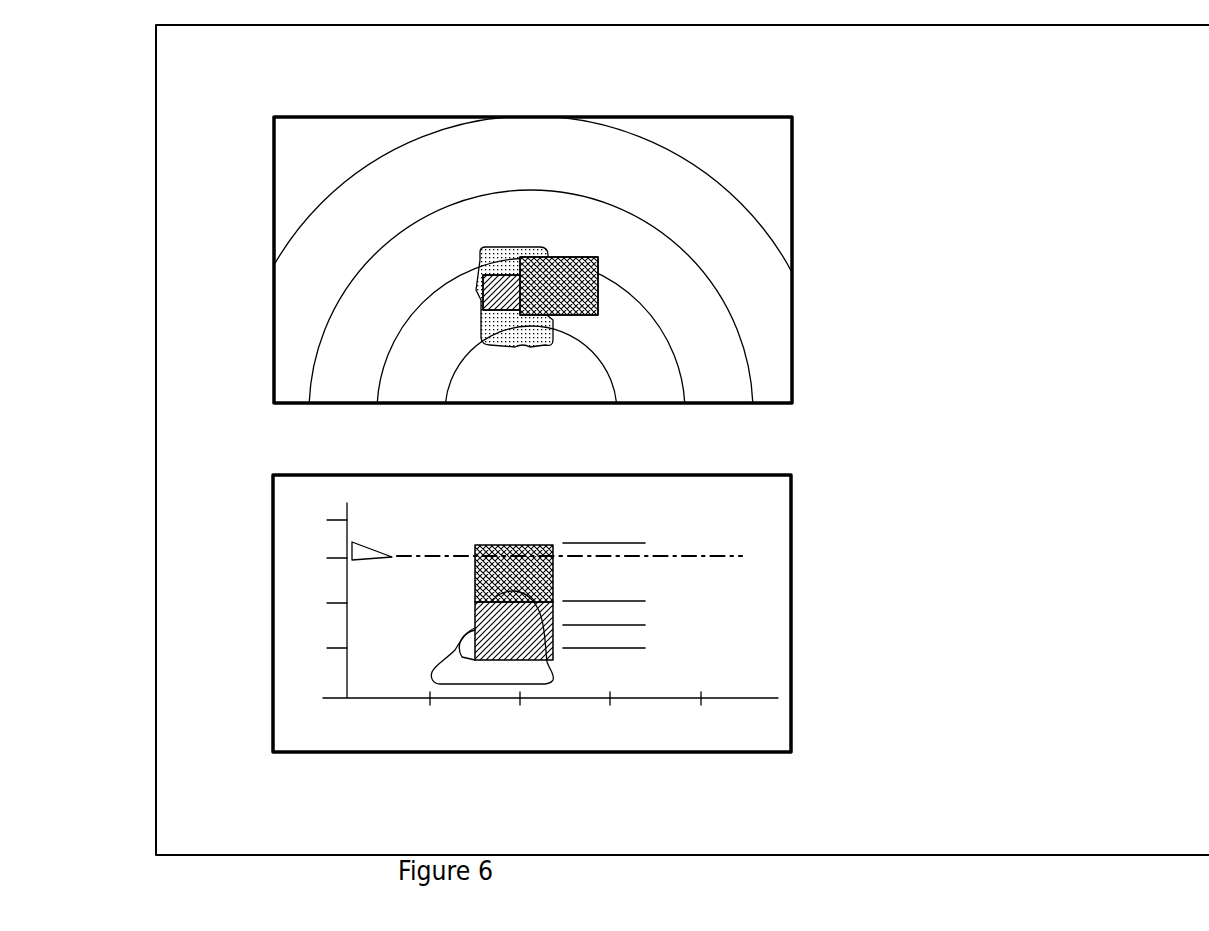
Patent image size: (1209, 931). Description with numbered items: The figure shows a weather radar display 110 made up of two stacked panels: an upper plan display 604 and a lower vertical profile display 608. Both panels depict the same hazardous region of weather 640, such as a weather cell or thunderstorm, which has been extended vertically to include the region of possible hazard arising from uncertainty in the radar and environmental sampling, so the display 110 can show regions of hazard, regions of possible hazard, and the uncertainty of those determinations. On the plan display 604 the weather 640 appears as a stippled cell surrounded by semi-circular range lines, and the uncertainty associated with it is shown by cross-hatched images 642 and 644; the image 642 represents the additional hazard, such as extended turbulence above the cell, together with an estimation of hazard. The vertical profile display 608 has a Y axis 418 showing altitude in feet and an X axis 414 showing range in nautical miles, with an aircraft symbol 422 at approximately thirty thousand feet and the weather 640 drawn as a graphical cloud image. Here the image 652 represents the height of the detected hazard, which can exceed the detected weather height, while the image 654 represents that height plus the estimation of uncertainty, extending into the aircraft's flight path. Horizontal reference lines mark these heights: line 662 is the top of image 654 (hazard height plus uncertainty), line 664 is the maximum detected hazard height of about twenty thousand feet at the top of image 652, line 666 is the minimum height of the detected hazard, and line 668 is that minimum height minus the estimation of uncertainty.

The display 110 is at (348, 26).
The plan display 604 is at (270, 348).
The vertical profile display 608 is at (268, 510).
The weather 640 is at (477, 310).
The image 642 is at (483, 274).
The image 644 is at (598, 258).
The image 654 is at (474, 544).
The image 652 is at (472, 611).
The X axis 414 is at (372, 693).
The Y axis 418 is at (348, 518).
The aircraft symbol 422 is at (349, 562).
The line 662 is at (598, 542).
The line 664 is at (627, 600).
The line 666 is at (612, 625).
The line 668 is at (622, 647).